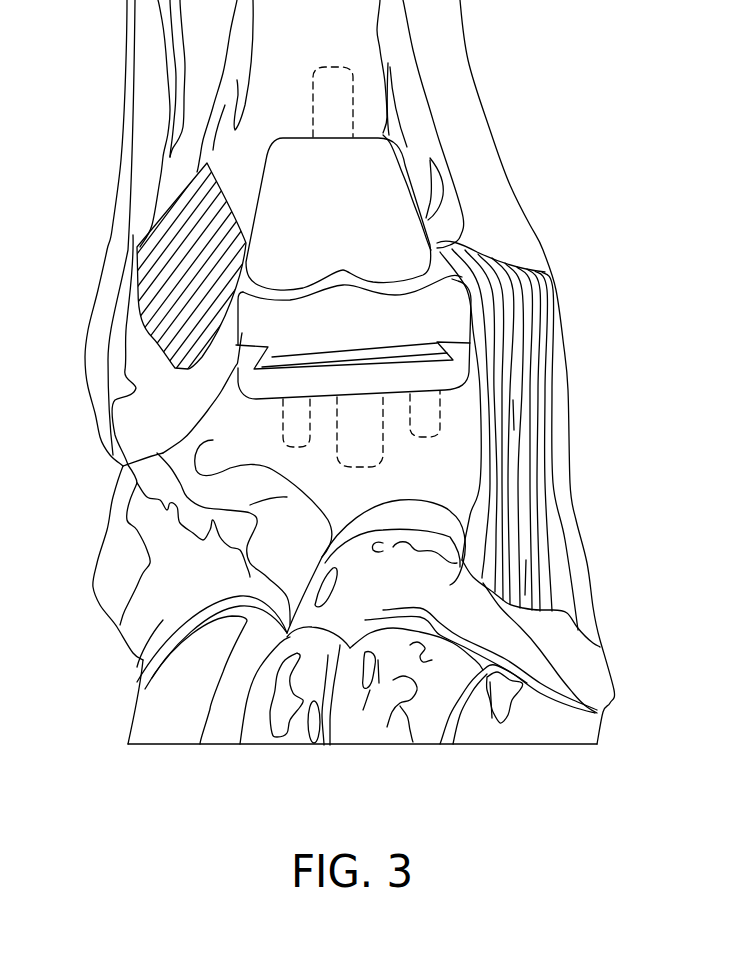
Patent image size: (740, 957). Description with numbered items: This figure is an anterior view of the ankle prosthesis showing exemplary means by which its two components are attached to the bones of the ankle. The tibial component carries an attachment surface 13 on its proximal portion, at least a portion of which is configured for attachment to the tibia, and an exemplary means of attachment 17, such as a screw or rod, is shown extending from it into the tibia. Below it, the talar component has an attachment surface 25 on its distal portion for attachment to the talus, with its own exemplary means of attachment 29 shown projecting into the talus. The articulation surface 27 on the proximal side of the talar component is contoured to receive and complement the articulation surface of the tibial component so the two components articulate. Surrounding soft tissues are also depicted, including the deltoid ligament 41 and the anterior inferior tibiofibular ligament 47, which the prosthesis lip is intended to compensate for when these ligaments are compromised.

The attachment surface 13 is at (357, 138).
The means of attachment 17 is at (352, 67).
The attachment surface 25 is at (443, 372).
The articulation surface 27 is at (417, 297).
The means of attachment 29 is at (395, 460).
The deltoid ligament 41 is at (557, 493).
The anterior inferior tibiofibular ligament 47 is at (150, 263).